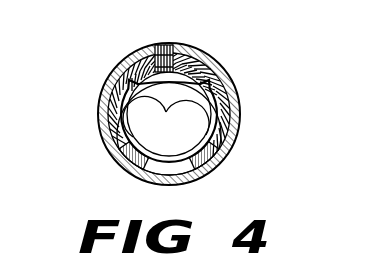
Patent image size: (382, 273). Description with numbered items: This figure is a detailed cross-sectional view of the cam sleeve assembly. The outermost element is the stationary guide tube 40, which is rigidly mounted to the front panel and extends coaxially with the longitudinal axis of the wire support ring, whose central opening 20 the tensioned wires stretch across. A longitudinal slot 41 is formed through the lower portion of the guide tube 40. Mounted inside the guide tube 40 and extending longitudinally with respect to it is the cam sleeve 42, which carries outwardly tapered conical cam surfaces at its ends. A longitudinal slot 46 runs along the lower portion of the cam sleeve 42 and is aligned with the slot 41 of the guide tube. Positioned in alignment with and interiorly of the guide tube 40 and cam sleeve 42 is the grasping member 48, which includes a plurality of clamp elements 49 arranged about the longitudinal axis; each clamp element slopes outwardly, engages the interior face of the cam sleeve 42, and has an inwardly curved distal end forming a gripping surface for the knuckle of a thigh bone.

The stationary guide tube 40 is at (217, 82).
The longitudinal slot 41 is at (190, 182).
The cam sleeve 42 is at (104, 88).
The longitudinal slot 46 is at (151, 168).
The grasping member 48 is at (137, 67).
The clamp elements 49 is at (165, 74).
The central opening 20 is at (176, 152).